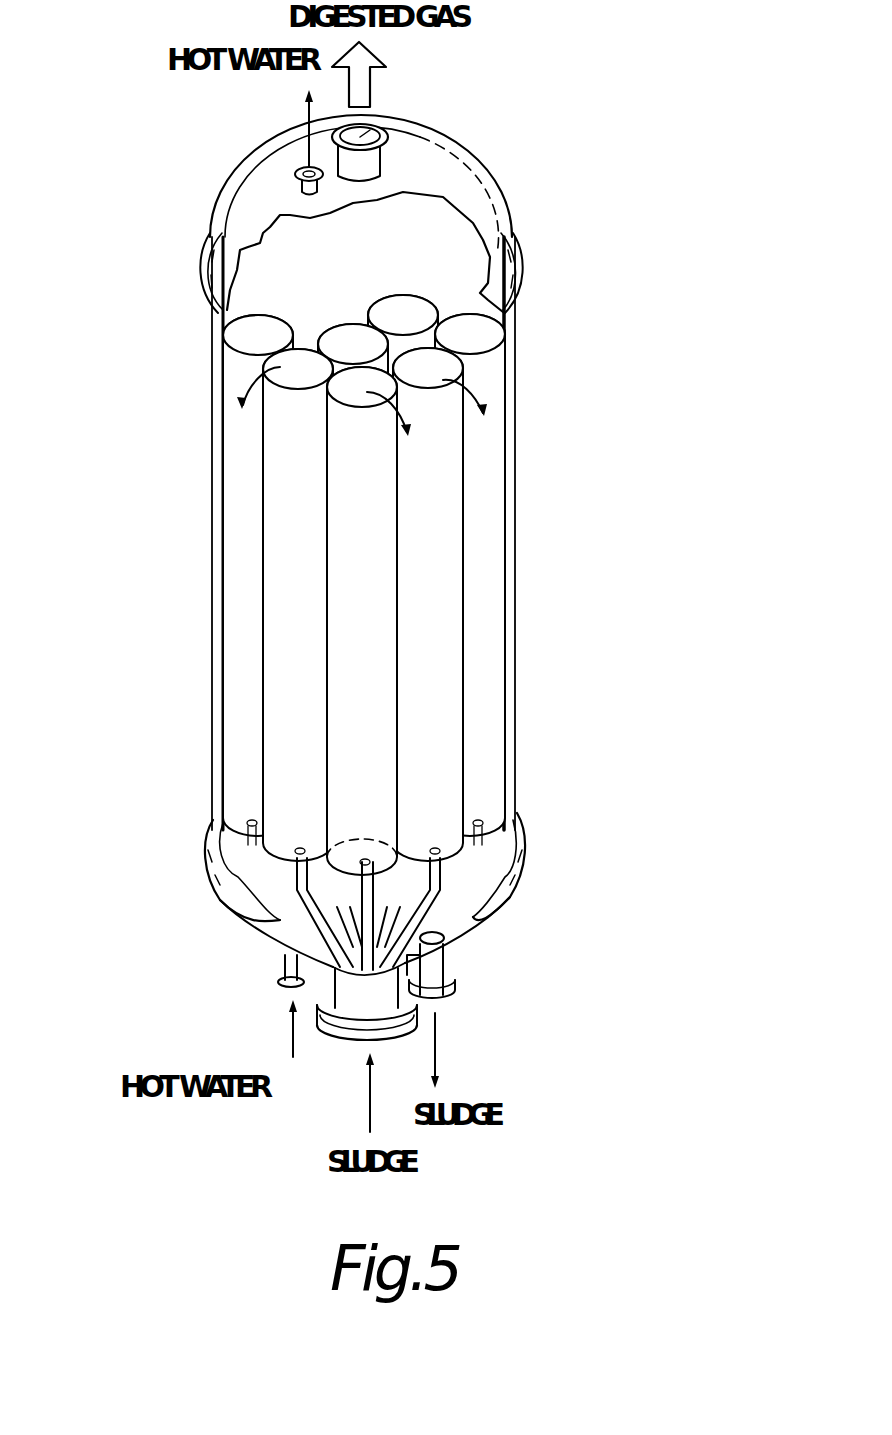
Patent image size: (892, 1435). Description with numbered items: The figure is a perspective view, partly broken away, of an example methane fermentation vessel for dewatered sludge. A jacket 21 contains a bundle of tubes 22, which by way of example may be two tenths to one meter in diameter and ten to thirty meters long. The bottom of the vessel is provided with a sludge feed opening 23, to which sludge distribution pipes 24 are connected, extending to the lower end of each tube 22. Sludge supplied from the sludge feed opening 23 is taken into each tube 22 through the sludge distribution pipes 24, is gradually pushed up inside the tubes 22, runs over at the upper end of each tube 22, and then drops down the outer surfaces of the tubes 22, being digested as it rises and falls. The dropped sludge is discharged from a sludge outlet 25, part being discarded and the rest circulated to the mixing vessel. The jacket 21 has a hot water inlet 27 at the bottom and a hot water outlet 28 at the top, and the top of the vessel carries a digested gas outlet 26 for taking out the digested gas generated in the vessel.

The jacket 21 is at (513, 560).
The tubes 22 is at (443, 473).
The sludge feed opening 23 is at (362, 1007).
The sludge distribution pipes 24 is at (287, 932).
The sludge outlet 25 is at (455, 997).
The digested gas outlet 26 is at (412, 140).
The hot water inlet 27 is at (290, 970).
The hot water outlet 28 is at (237, 163).